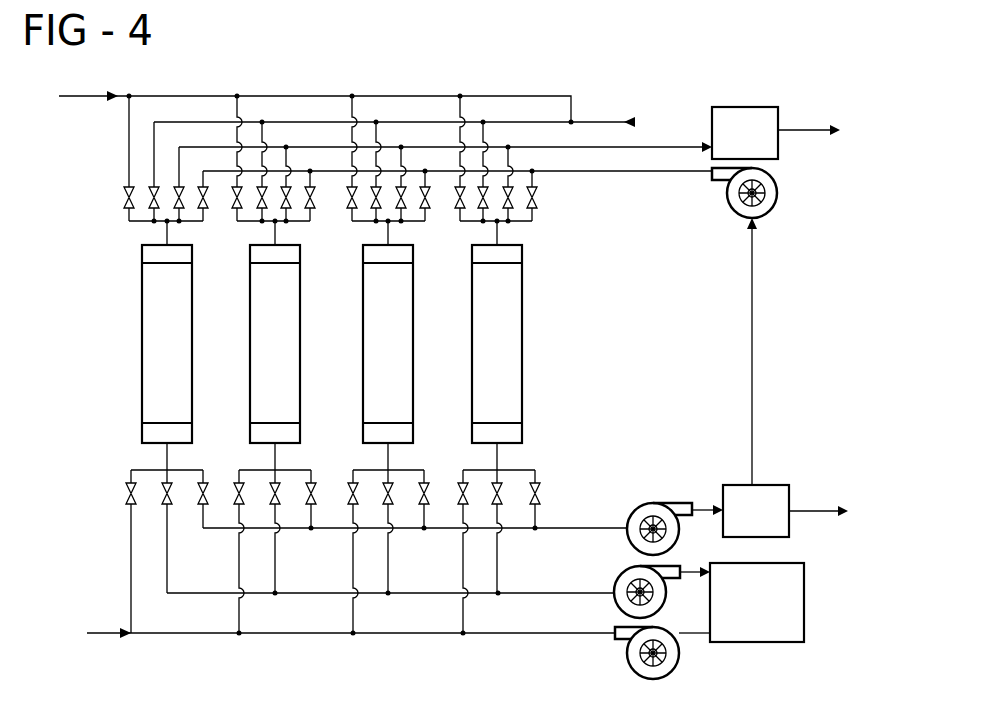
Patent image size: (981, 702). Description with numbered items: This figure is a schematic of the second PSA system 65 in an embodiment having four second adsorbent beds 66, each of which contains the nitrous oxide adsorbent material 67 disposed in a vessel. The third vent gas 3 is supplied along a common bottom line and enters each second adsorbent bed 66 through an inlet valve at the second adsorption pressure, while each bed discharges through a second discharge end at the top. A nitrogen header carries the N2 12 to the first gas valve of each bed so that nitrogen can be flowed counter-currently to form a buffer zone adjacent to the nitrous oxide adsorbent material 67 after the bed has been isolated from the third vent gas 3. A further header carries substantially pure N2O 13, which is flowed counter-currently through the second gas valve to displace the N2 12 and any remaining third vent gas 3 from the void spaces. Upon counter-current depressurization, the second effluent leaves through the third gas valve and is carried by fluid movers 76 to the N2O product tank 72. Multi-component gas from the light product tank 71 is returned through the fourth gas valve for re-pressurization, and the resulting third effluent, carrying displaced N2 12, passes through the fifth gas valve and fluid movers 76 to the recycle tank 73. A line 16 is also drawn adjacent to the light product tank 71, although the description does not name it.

The N2 12 is at (315, 98).
The exhaust gas line 16 is at (410, 113).
The substantially pure N2O 13 is at (457, 162).
The third vent gas 3 is at (351, 637).
The second PSA system 65 is at (304, 364).
The nitrous oxide adsorbent material 67 is at (175, 397).
The second adsorbent bed 66 is at (192, 432).
The light product tank 71 is at (736, 107).
The N2O product tank 72 is at (789, 491).
The recycle tank 73 is at (804, 612).
The fluid movers 76 is at (650, 503).